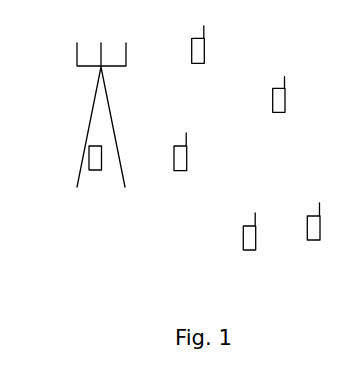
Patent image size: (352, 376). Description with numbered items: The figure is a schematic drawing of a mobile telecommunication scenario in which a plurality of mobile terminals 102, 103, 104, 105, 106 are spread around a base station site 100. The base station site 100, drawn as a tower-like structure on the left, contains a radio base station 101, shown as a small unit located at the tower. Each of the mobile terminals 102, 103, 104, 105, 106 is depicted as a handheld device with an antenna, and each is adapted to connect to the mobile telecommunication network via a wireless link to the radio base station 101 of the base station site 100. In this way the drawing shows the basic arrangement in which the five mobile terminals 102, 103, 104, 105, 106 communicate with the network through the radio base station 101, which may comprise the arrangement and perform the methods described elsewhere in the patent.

The base station site 100 is at (90, 121).
The radio base station 101 is at (97, 170).
The mobile terminal 102 is at (249, 250).
The mobile terminal 103 is at (180, 171).
The mobile terminal 104 is at (197, 63).
The mobile terminal 105 is at (278, 112).
The mobile terminal 106 is at (313, 240).